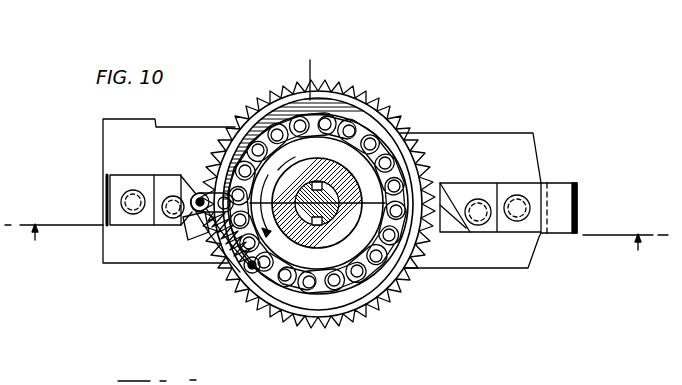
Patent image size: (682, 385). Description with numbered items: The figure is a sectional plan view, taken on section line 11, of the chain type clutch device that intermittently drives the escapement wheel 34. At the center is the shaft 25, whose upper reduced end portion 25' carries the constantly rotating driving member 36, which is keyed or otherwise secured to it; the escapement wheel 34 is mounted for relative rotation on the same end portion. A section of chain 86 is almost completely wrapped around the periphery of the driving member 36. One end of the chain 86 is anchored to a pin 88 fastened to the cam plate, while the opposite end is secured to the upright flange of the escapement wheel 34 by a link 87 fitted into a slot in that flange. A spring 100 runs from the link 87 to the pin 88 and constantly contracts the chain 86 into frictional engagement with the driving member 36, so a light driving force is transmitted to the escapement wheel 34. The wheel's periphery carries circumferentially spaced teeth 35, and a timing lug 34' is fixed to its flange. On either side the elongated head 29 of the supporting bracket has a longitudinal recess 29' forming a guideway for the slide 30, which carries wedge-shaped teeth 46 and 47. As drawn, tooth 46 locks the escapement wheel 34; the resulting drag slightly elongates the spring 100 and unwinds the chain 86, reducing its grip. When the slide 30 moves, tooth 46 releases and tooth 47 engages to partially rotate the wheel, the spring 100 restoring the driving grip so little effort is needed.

The shaft 25 is at (318, 182).
The escapement wheel 34 is at (318, 180).
The teeth 35 is at (427, 150).
The chain 86 is at (347, 127).
The driving member 36 is at (342, 148).
The head 29 is at (146, 191).
The tooth 46 is at (177, 185).
The link 87 is at (200, 193).
The timing lug 34' is at (192, 240).
The spring 100 is at (225, 247).
The pin 88 is at (251, 270).
The section line 11- 11 is at (336, 250).
The recess 29' is at (470, 200).
The tooth 47 is at (460, 208).
The slide 30 is at (562, 188).
The upper reduced end portion 25' is at (342, 370).